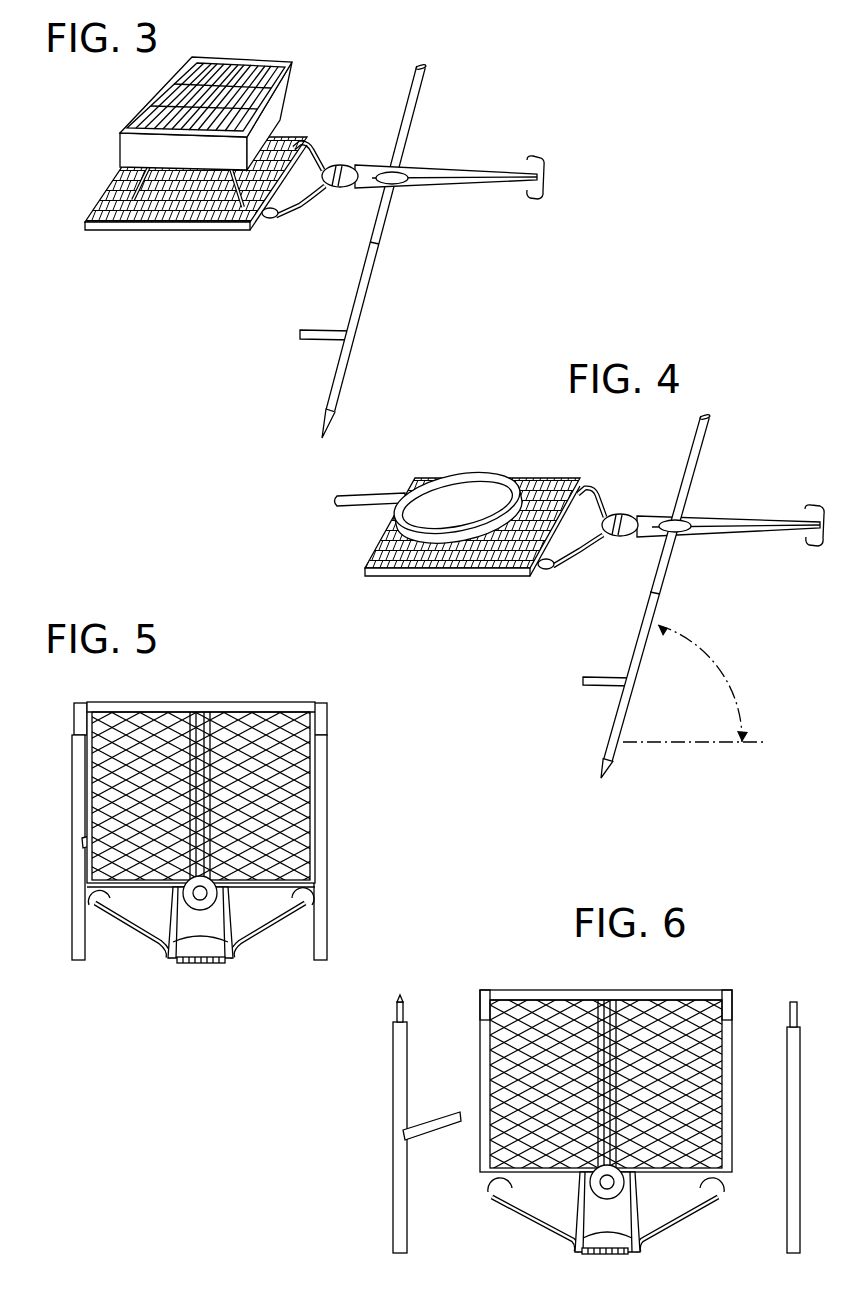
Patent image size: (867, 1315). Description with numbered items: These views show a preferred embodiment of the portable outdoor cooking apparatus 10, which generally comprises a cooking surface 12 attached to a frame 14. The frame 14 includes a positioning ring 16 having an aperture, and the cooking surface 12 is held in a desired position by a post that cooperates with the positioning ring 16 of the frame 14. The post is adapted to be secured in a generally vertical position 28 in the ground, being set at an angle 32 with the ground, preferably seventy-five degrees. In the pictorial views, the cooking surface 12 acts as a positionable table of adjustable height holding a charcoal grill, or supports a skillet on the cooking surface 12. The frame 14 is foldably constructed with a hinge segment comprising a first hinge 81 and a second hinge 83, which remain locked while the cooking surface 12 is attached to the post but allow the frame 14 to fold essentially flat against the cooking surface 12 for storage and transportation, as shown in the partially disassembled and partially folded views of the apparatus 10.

In FIG. 3, the portable outdoor cooking apparatus 10 is at (460, 272).
In FIG. 4, the portable outdoor cooking apparatus 10 is at (518, 638).
In FIG. 5, the portable outdoor cooking apparatus 10 is at (112, 978).
In FIG. 6, the portable outdoor cooking apparatus 10 is at (517, 970).
In FIG. 3, the cooking surface 12 is at (120, 183).
In FIG. 4, the cooking surface 12 is at (373, 553).
In FIG. 5, the cooking surface 12 is at (223, 710).
In FIG. 6, the cooking surface 12 is at (650, 1018).
In FIG. 3, the frame 14 is at (437, 163).
In FIG. 4, the frame 14 is at (727, 513).
In FIG. 5, the frame 14 is at (123, 927).
In FIG. 6, the frame 14 is at (533, 1220).
In FIG. 5, the positioning ring 16 is at (210, 893).
In FIG. 6, the positioning ring 16 is at (607, 1182).
In FIG. 4, the generally vertical position 28 is at (740, 435).
In FIG. 4, the angle 32 is at (717, 662).
In FIG. 5, the first hinge 81 is at (95, 902).
In FIG. 6, the first hinge 81 is at (493, 1198).
In FIG. 5, the second hinge 83 is at (312, 903).
In FIG. 6, the second hinge 83 is at (715, 1198).